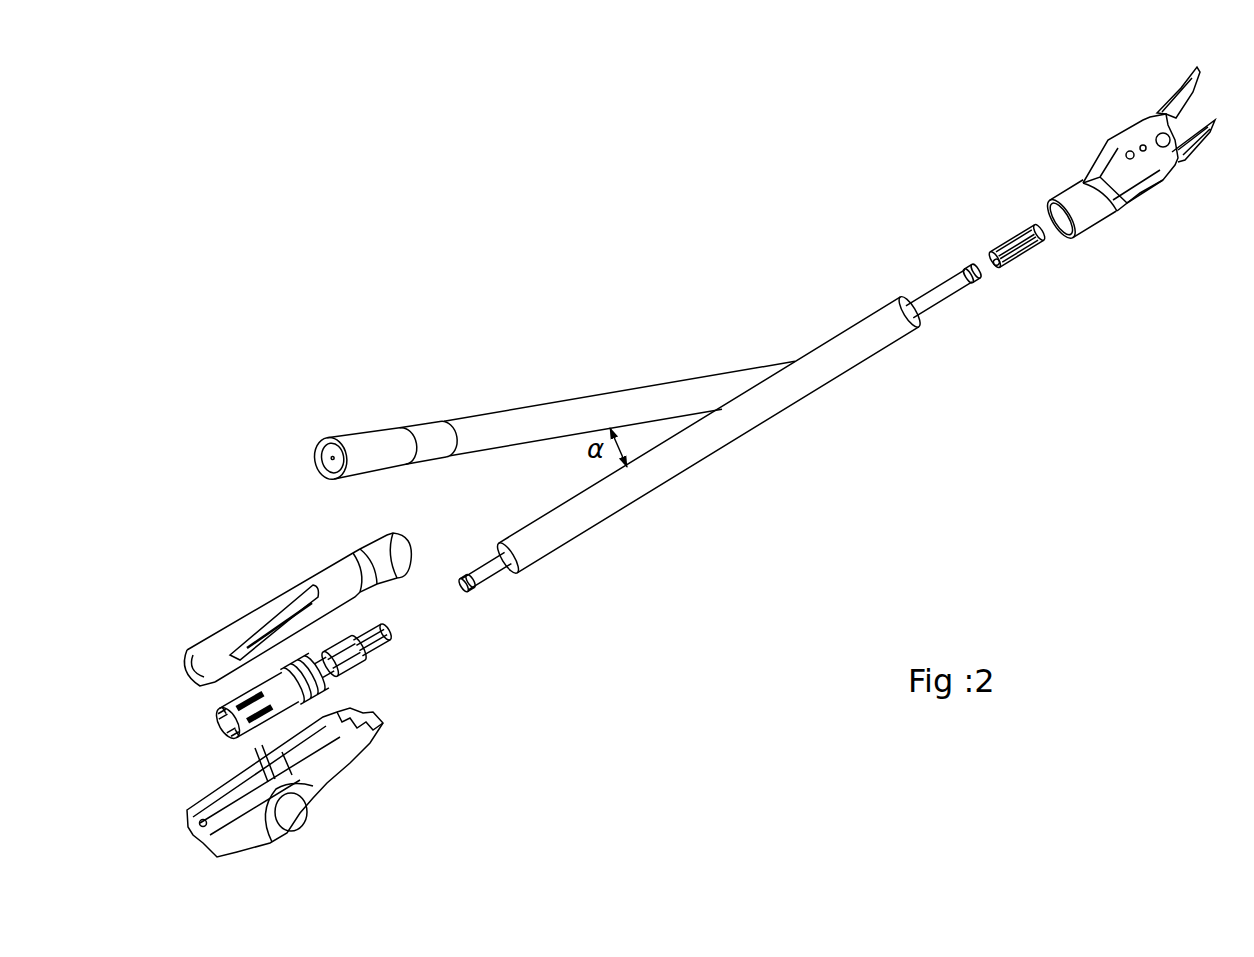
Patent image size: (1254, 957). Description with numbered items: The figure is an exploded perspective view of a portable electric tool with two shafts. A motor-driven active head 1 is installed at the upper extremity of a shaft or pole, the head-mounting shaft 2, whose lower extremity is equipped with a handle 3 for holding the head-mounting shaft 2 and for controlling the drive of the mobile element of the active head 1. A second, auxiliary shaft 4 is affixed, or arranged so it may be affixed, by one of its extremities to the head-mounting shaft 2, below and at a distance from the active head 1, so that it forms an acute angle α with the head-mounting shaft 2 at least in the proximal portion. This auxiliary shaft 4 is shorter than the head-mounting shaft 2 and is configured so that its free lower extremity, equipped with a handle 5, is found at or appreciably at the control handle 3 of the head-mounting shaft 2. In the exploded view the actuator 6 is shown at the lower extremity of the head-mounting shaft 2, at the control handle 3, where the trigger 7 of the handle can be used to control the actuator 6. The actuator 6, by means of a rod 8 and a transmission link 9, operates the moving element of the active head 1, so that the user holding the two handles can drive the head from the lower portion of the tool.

The active head 1 is at (1108, 122).
The head-mounting shaft 2 is at (813, 398).
The handle 3 is at (237, 630).
The auxiliary shaft 4 is at (660, 380).
The handle 5 is at (385, 412).
The actuator 6 is at (221, 712).
The trigger 7 is at (303, 810).
The rod 8 is at (485, 578).
The transmission link 9 is at (1007, 232).